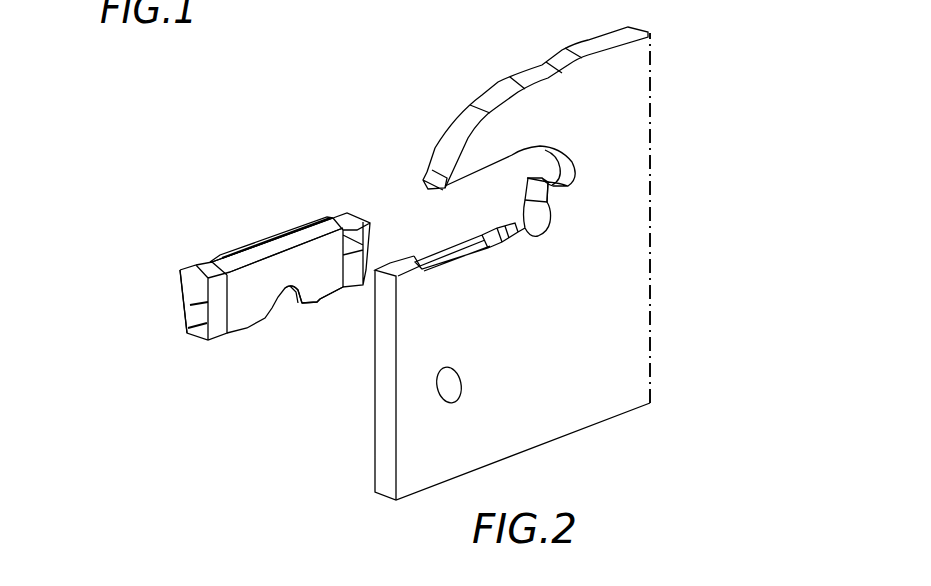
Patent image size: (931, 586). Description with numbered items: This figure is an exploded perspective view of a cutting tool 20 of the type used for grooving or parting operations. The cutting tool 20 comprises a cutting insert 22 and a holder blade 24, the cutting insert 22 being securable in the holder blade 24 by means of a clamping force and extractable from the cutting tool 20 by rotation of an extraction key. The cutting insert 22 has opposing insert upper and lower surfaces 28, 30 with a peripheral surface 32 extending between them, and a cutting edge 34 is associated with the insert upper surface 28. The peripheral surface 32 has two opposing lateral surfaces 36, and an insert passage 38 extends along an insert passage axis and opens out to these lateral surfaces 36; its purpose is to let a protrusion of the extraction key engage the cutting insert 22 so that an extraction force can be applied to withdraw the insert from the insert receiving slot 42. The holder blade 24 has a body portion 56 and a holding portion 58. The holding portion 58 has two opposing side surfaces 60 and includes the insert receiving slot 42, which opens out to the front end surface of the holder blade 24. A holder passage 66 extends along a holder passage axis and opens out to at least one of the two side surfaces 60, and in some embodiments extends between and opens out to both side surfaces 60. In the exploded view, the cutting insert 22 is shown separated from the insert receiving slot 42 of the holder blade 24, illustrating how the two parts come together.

The cutting tool 20 is at (216, 284).
The cutting insert 22 is at (135, 300).
The holder blade 24 is at (665, 74).
The insert upper surface 28 is at (249, 223).
The insert lower surface 30 is at (304, 342).
The peripheral surface 32 is at (252, 301).
The cutting edge 34 is at (181, 276).
The lateral surfaces 36 is at (235, 330).
The insert passage 38 is at (283, 314).
The insert receiving slot 42 is at (412, 222).
The body portion 56 is at (616, 334).
The holding portion 58 is at (620, 74).
The side surfaces 60 is at (535, 422).
The holder passage 66 is at (423, 386).